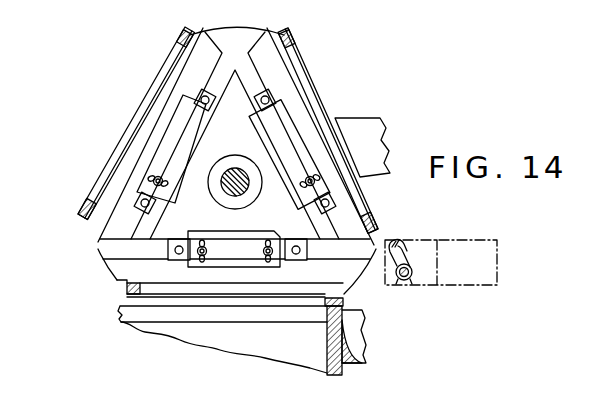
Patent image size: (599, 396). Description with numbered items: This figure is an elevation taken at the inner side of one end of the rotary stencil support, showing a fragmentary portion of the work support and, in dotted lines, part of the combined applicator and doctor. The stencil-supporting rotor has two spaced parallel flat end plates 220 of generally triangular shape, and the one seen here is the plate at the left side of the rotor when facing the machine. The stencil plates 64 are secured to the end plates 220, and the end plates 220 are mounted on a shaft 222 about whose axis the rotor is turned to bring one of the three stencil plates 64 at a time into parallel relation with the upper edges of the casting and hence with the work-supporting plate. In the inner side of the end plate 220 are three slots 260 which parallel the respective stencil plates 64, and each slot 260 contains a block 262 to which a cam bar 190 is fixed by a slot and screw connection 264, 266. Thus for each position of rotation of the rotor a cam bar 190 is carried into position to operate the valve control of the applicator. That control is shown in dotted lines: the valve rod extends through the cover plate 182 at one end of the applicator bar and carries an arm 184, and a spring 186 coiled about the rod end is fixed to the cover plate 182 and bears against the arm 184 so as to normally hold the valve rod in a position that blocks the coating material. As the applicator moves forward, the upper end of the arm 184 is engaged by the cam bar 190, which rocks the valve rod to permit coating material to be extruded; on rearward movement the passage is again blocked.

The stencil plate 64 is at (148, 146).
The cover plate 182 is at (430, 269).
The arm 184 is at (407, 241).
The spring 186 is at (403, 284).
The cam bar 190 is at (178, 143).
The end plate 220 is at (184, 75).
The shaft 222 is at (245, 193).
The slot 260 is at (125, 262).
The block 262 is at (272, 100).
The slot 264 is at (140, 165).
The screw 266 is at (150, 183).